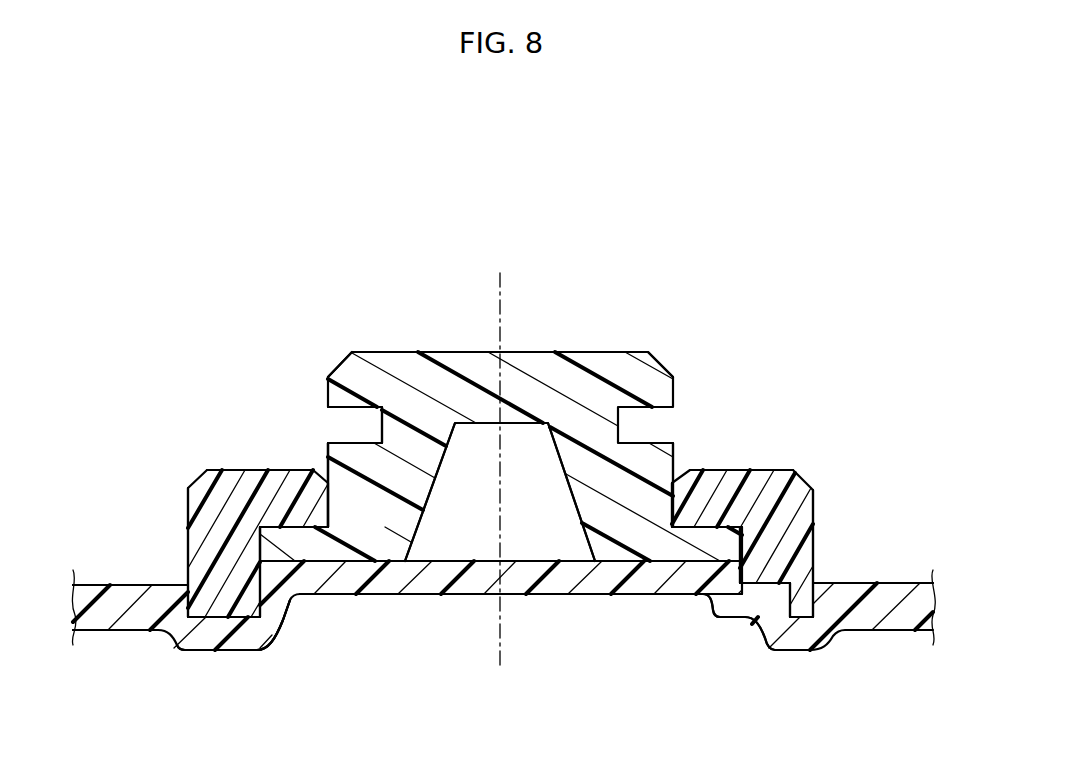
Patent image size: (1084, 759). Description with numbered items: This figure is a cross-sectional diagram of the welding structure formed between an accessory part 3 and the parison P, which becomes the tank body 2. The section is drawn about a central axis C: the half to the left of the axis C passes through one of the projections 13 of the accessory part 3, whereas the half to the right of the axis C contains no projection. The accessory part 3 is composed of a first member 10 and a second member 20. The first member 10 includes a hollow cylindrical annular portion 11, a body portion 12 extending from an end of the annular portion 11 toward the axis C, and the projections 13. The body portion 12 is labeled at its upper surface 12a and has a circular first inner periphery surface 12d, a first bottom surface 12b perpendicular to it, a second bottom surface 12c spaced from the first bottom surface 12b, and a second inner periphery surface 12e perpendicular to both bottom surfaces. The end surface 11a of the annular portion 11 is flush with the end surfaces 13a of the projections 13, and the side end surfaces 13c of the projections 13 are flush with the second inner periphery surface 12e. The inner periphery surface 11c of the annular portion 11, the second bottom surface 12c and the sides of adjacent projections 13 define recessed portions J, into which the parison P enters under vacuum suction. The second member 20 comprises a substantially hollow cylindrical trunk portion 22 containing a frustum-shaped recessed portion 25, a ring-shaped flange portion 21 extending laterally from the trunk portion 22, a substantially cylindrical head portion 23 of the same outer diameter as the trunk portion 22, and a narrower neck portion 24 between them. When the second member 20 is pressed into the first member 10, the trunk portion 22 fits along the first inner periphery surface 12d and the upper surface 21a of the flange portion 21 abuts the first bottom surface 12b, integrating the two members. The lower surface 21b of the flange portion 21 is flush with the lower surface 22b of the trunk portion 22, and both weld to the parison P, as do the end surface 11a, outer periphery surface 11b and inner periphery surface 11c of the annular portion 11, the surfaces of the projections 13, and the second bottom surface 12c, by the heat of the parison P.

The accessory part 3 is at (730, 313).
The first member 10 is at (816, 514).
The annular portion 11 is at (188, 510).
The end surface 11a is at (203, 620).
The outer periphery surface 11b is at (148, 507).
The inner periphery surface 11c is at (772, 652).
The body portion 12 is at (790, 503).
The top surface of clamp block 12a is at (245, 470).
The first bottom surface 12b is at (643, 562).
The second bottom surface 12c is at (745, 619).
The first inner periphery surface 12d is at (330, 512).
The second inner periphery surface 12e is at (275, 545).
The projection 13 is at (262, 655).
The end surface 13a is at (252, 620).
The side end surface 13c is at (282, 618).
The second member 20 is at (617, 352).
The flange portion 21 is at (293, 547).
The upper surface 21a is at (700, 520).
The lower surface 21b is at (305, 595).
The trunk portion 22 is at (405, 487).
The lower surface 22b is at (390, 562).
The head portion 23 is at (407, 372).
The neck portion 24 is at (378, 425).
The recessed portion 25 is at (477, 455).
The tank body 2 is at (100, 618).
The parison P is at (100, 618).
The axis C is at (500, 297).
The recessed portion J is at (747, 598).